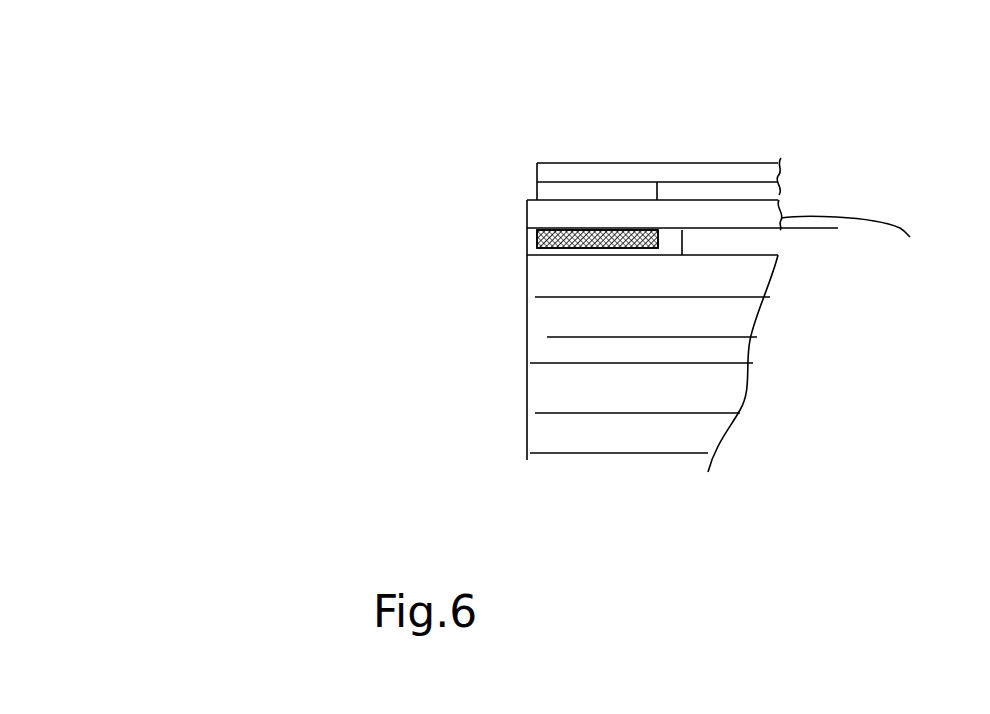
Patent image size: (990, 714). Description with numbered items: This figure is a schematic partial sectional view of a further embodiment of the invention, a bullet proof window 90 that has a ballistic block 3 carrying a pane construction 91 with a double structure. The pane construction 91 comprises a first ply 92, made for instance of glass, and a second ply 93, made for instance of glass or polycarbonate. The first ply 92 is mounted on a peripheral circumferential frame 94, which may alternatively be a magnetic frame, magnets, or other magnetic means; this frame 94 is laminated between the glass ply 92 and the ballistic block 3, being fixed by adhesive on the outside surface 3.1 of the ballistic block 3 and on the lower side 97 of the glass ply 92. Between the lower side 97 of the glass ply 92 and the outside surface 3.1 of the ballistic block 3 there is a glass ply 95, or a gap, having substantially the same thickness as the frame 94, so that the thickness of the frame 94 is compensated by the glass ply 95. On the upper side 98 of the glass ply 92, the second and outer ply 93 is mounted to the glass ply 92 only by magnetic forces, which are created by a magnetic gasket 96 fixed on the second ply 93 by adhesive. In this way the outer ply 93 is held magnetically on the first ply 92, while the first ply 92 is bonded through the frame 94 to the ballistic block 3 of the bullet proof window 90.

The bullet proof window 90 is at (332, 243).
The pane construction 91 is at (520, 247).
The first ply 92 is at (872, 244).
The second ply 93 is at (780, 172).
The peripheral circumferential frame 94 is at (657, 255).
The glass ply 95 is at (716, 230).
The magnetic gasket 96 is at (553, 185).
The lower side 97 is at (827, 228).
The upper side 98 is at (687, 188).
The ballistic block 3 is at (590, 378).
The outside surface 3.1 is at (761, 236).